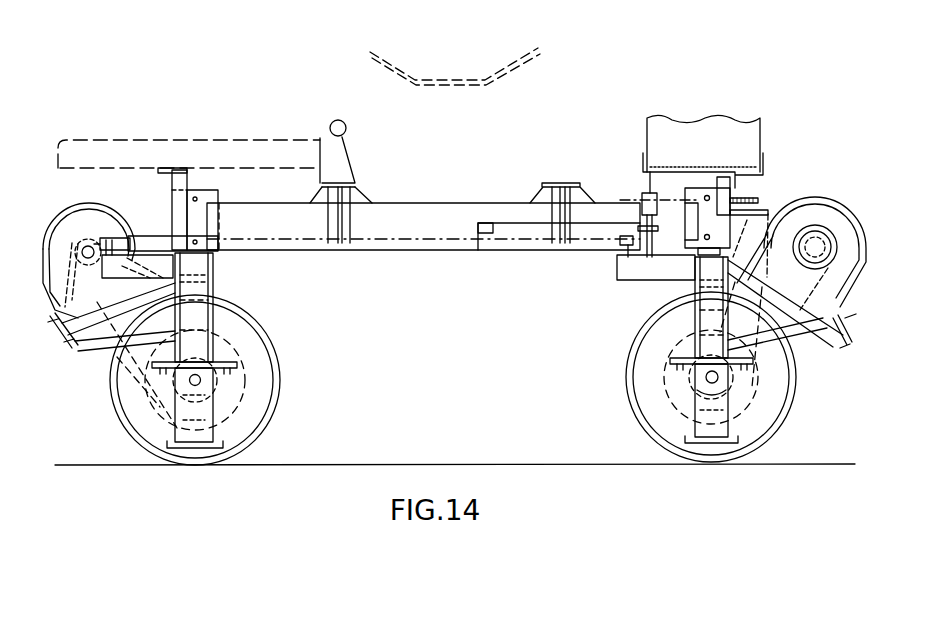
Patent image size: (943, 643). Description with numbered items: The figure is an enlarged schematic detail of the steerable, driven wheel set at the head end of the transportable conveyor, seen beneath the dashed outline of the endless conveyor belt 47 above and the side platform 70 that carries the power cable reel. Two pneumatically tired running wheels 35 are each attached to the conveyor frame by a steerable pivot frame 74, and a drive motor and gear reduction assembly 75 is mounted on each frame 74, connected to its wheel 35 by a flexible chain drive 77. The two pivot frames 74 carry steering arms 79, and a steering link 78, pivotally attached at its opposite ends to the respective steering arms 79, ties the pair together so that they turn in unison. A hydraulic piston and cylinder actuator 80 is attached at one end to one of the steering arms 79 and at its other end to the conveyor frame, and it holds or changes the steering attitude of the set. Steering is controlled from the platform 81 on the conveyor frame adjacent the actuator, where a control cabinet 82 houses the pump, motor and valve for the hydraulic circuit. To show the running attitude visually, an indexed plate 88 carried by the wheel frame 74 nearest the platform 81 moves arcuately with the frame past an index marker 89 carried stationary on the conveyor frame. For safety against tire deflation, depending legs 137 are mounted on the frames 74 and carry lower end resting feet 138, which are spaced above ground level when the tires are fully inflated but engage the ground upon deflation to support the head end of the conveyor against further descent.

The endless conveyor belt 47 is at (407, 66).
The platform 70 is at (150, 140).
The control cabinet 82 is at (745, 130).
The platform 81 is at (748, 166).
The hydraulic piston and cylinder actuator 80 is at (640, 227).
The index marker 89 is at (750, 198).
The indexed plate 88 is at (770, 211).
The drive motor and gear reduction assembly 75 is at (58, 212).
The steering link 78 is at (147, 236).
The steering arm 79 is at (104, 266).
The steerable pivot frame 74 is at (214, 292).
The running wheel 35 is at (282, 380).
The chain drive 77 is at (108, 373).
The depending leg 137 is at (214, 420).
The foot 138 is at (194, 450).